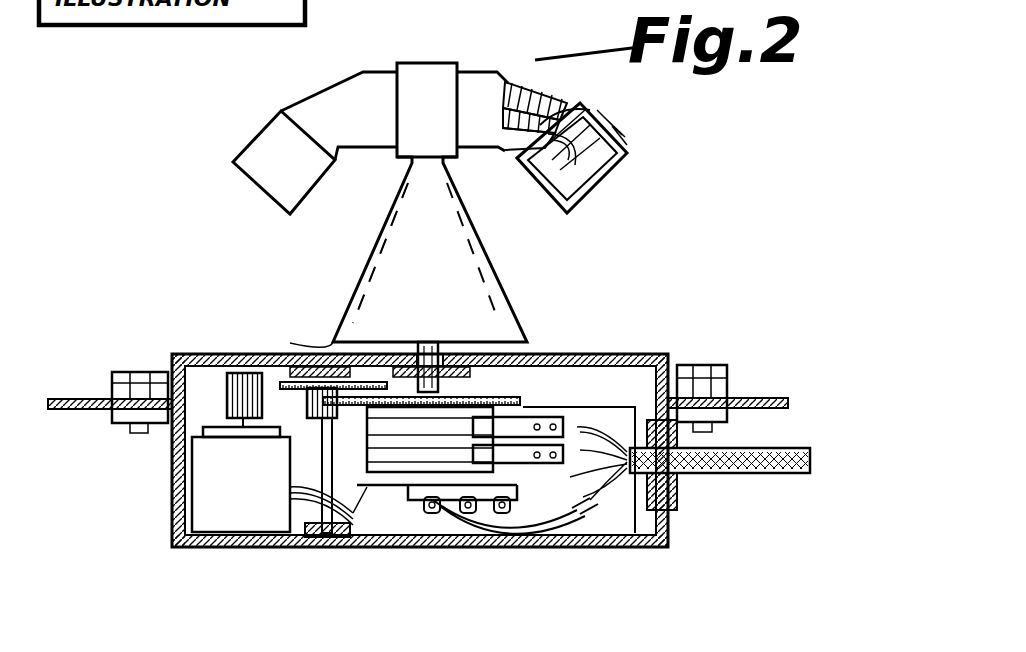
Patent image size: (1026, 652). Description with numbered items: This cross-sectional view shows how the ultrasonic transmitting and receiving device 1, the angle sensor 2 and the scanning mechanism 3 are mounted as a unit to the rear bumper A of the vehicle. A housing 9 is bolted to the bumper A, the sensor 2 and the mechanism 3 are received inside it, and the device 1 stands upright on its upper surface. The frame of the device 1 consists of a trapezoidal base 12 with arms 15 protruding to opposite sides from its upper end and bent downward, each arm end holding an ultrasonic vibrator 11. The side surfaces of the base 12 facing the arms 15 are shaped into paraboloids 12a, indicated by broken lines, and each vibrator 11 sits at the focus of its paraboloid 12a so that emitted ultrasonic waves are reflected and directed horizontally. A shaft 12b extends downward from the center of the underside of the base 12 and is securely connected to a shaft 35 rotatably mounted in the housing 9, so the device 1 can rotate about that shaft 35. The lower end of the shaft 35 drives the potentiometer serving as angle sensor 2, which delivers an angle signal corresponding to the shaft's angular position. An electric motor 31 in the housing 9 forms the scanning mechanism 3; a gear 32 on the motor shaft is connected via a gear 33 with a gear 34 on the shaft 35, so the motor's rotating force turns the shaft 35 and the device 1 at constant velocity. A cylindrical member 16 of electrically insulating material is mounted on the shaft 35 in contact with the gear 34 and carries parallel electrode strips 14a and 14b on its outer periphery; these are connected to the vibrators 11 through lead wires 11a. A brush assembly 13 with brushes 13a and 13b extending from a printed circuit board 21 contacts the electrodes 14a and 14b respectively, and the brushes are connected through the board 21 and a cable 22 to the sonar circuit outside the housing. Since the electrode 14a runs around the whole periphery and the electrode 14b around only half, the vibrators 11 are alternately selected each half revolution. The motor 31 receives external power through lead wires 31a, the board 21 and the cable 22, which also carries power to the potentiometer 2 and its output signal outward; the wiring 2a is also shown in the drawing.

The ultrasonic transmitting and receiving device 1 is at (458, 201).
The angle sensor 2 is at (429, 461).
The connecting wires 2a is at (517, 457).
The scanning mechanism 3 is at (226, 449).
The housing 9 is at (667, 353).
The ultrasonic vibrator 11 is at (573, 183).
The lead wires 11a is at (567, 102).
The trapezoidal base 12 is at (462, 225).
The paraboloid 12a is at (465, 268).
The shaft 12b is at (435, 343).
The terminal block 13 is at (487, 421).
The brush 13a is at (523, 428).
The brush 13b is at (607, 513).
The electrode 14a is at (455, 425).
The electrode 14b is at (408, 453).
The arm 15 is at (332, 93).
The cylindrical member 16 is at (387, 412).
The printed circuit board 21 is at (670, 517).
The cable 22 is at (802, 450).
The electric motor 31 is at (212, 502).
The lead wires 31a is at (293, 502).
The gear 32 is at (200, 385).
The gear 33 is at (270, 382).
The gear 34 is at (532, 415).
The shaft 35 is at (337, 347).
The rear bumper A is at (772, 395).